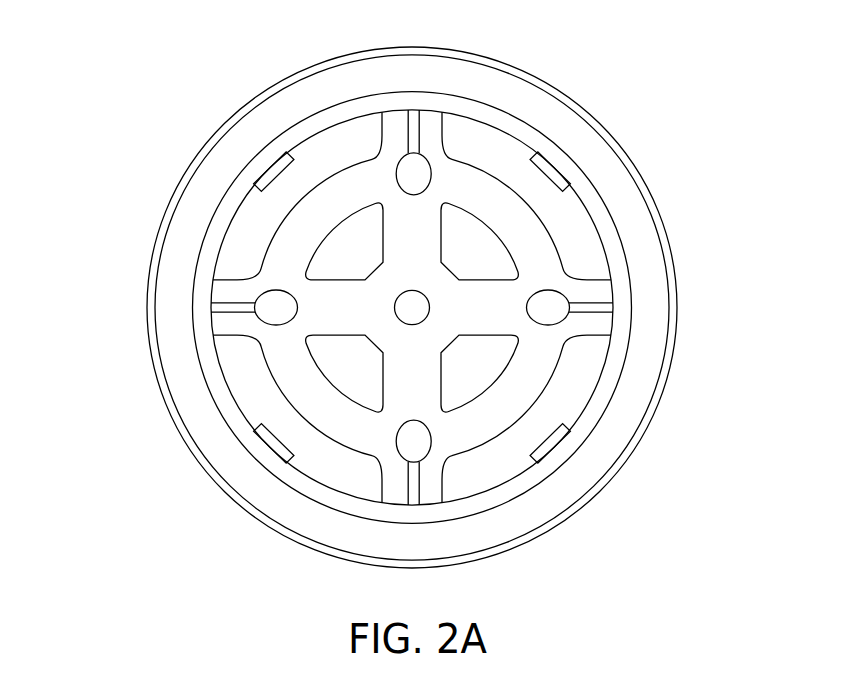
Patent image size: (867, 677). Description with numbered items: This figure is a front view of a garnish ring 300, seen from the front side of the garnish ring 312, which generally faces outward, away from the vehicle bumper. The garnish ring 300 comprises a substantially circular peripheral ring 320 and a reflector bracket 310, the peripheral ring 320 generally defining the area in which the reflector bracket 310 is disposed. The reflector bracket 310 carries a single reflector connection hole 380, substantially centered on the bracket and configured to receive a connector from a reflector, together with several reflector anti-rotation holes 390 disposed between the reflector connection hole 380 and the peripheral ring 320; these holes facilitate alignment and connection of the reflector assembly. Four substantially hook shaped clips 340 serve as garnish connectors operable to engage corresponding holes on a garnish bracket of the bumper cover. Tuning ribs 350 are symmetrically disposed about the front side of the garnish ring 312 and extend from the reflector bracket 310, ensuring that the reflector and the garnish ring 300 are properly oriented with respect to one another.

The garnish ring 300 is at (145, 140).
The reflector bracket 310 is at (343, 160).
The front side of the garnish ring 312 is at (661, 141).
The peripheral ring 320 is at (547, 76).
The hook shaped clips 340 is at (270, 172).
The tuning ribs 350 is at (422, 118).
The reflector connection hole 380 is at (394, 308).
The reflector anti-rotation hole 390 is at (413, 196).